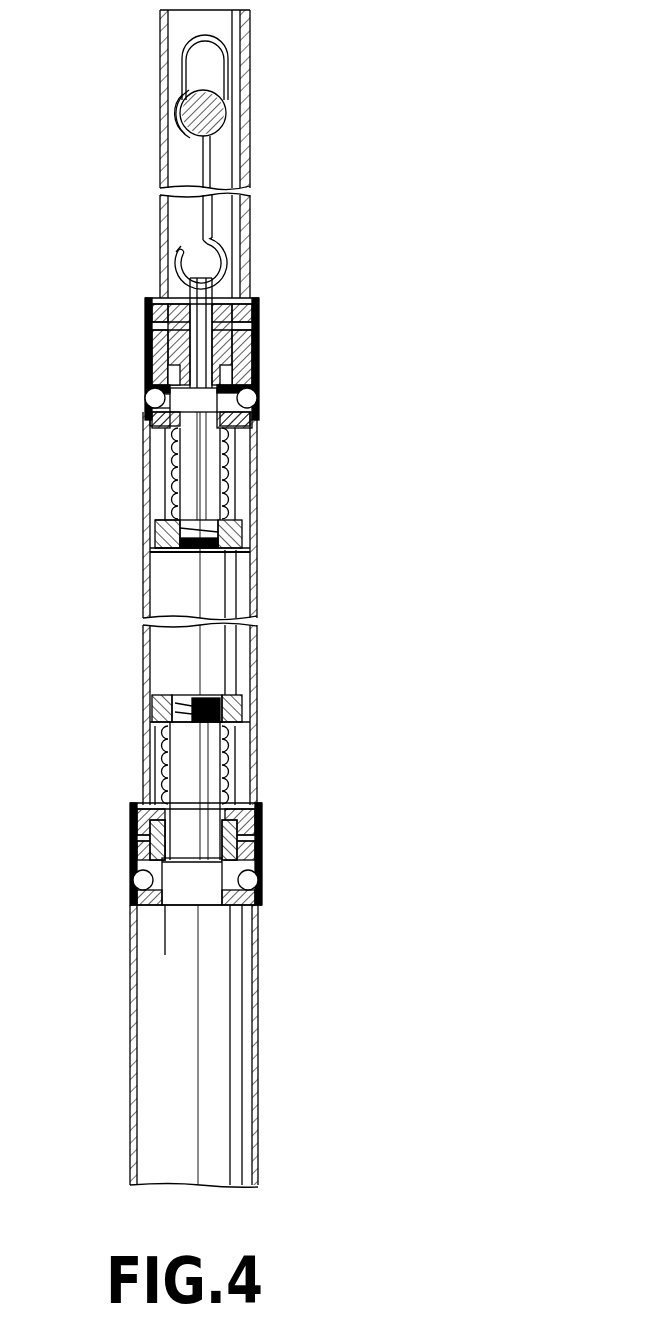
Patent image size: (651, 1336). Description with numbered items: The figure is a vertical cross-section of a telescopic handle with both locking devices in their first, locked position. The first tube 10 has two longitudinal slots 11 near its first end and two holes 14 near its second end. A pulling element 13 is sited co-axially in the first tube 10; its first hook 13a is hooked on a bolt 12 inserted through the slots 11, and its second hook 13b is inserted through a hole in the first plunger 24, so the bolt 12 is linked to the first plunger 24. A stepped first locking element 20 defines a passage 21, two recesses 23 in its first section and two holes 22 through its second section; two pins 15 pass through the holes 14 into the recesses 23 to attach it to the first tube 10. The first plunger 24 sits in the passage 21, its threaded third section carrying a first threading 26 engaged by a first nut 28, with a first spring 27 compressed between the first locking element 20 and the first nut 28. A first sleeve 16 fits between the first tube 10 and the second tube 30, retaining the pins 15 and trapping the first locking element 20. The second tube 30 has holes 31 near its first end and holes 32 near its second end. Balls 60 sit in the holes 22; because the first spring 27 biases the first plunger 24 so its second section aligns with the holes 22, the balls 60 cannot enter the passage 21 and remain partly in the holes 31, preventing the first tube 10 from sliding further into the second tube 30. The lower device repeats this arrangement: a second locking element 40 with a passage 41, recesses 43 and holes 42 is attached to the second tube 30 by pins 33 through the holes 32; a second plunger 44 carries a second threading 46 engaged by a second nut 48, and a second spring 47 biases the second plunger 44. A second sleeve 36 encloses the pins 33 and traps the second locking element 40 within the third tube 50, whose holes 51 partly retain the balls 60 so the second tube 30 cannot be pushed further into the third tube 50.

The first tube 10 is at (250, 166).
The slots 11 is at (194, 57).
The bolt 12 is at (228, 118).
The pulling element 13 is at (212, 230).
The first hook 13a is at (178, 113).
The second hook 13b is at (180, 250).
The holes 14 is at (259, 312).
The pins 15 is at (259, 336).
The first sleeve 16 is at (150, 300).
The first locking element 20 is at (259, 372).
The passage 21 is at (259, 394).
The holes 22 is at (256, 408).
The recesses 23 is at (150, 326).
The first plunger 24 is at (150, 372).
The first threading 26 is at (250, 548).
The first spring 27 is at (238, 490).
The first nut 28 is at (150, 546).
The second tube 30 is at (257, 597).
The holes 31 is at (150, 395).
The holes 32 is at (262, 822).
The pins 33 is at (262, 840).
The second sleeve 36 is at (135, 818).
The second locking element 40 is at (262, 874).
The passage 41 is at (165, 908).
The holes 42 is at (262, 886).
The recesses 43 is at (137, 830).
The second plunger 44 is at (132, 866).
The second threading 46 is at (190, 696).
The second spring 47 is at (240, 762).
The second nut 48 is at (257, 712).
The third tube 50 is at (258, 1080).
The holes 51 is at (133, 890).
The balls 60 is at (152, 404).